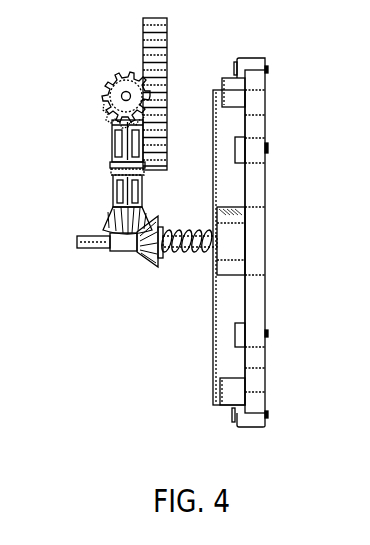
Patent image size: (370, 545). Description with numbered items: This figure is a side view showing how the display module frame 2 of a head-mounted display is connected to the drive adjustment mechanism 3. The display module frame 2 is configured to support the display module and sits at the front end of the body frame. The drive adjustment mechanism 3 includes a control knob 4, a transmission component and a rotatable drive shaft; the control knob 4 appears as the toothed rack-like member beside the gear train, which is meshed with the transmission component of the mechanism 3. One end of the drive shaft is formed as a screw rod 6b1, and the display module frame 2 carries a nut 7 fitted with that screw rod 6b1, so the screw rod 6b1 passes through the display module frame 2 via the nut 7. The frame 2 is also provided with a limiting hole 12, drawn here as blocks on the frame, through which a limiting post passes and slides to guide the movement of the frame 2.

The display module frame 2 is at (265, 70).
The drive adjustment mechanism 3 is at (103, 58).
The control knob 4 is at (165, 47).
The nut 7 is at (233, 245).
The limiting hole 12 is at (233, 90).
The screw rod 6b1 is at (193, 253).